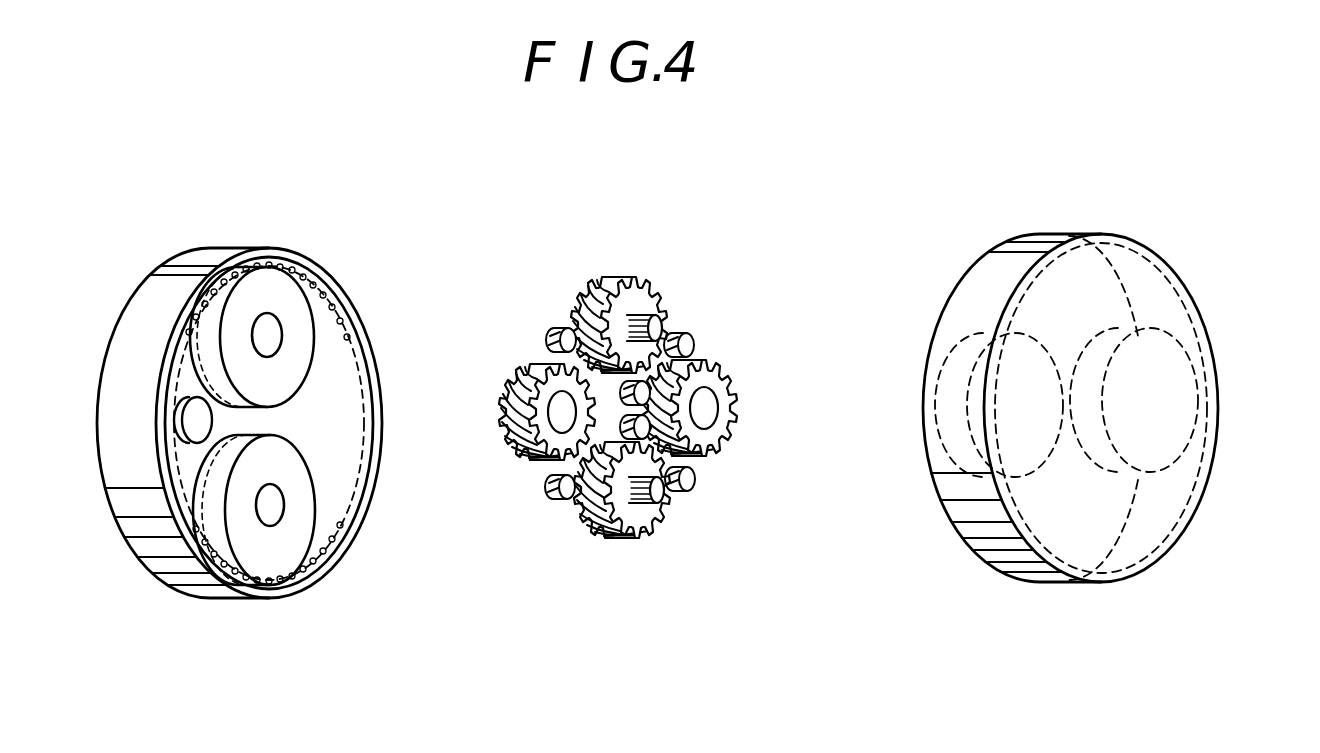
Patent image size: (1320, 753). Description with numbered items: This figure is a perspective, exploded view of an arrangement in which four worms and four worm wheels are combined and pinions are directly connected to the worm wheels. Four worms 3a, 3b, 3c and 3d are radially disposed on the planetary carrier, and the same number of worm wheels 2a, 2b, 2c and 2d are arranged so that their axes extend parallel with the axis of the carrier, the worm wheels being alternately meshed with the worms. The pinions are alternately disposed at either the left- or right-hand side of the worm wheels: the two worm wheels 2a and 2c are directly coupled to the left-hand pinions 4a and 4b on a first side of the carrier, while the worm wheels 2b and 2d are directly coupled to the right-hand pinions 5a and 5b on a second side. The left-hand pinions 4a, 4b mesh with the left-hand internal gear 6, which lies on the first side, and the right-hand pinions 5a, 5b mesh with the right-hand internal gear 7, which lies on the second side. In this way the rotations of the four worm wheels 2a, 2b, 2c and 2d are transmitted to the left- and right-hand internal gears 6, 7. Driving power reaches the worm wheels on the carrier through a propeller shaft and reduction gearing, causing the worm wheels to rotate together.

The worm wheel 2a is at (612, 273).
The worm wheel 2b is at (512, 447).
The worm wheel 2c is at (627, 520).
The worm wheel 2d is at (713, 433).
The worm 3a is at (558, 352).
The worm 3b is at (573, 497).
The worm 3c is at (688, 482).
The worm 3d is at (692, 338).
The left-hand pinion 4a is at (280, 293).
The left-hand pinion 4b is at (285, 547).
The right-hand pinion 5a is at (967, 352).
The right-hand pinion 5b is at (1162, 358).
The left-hand internal gear 6 is at (1047, 235).
The right-hand internal gear 7 is at (202, 262).